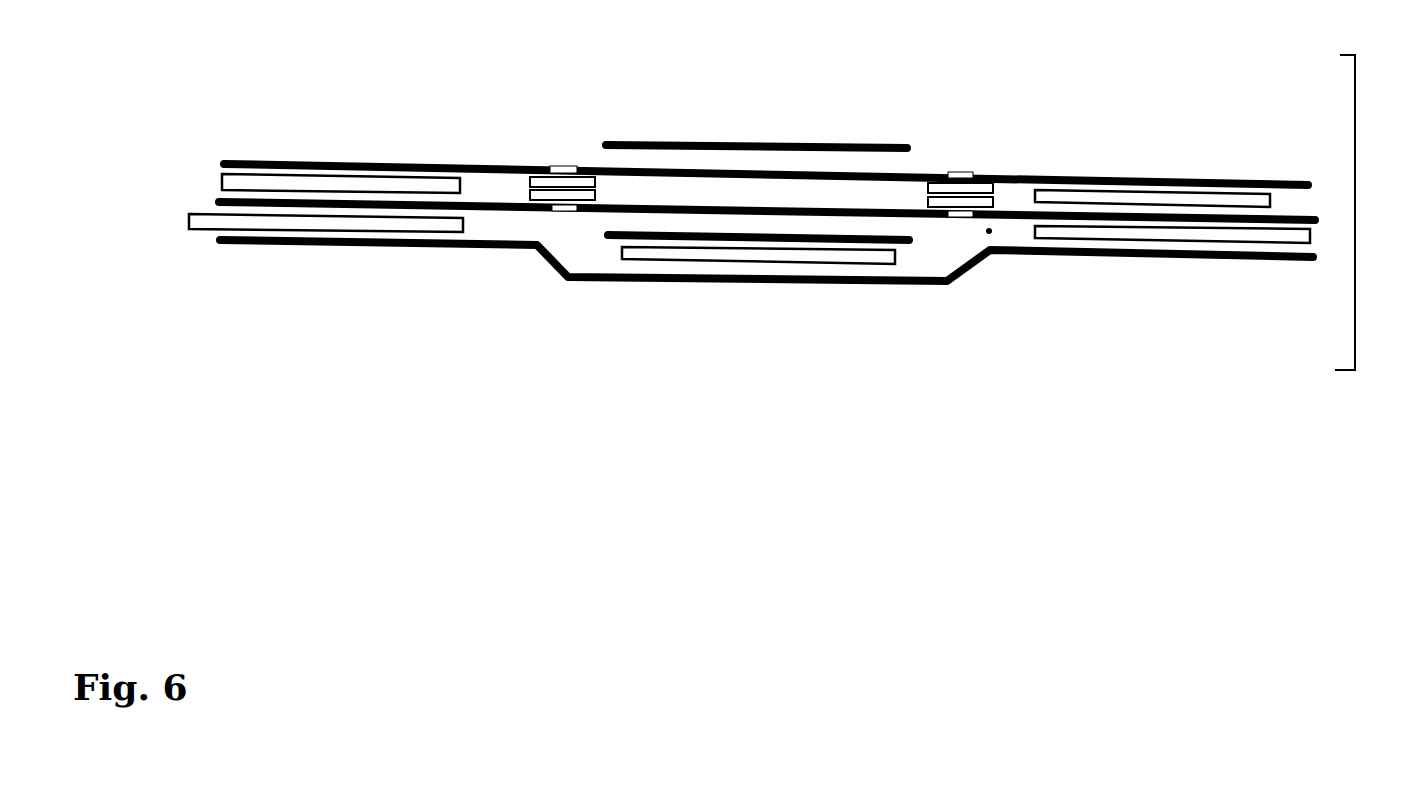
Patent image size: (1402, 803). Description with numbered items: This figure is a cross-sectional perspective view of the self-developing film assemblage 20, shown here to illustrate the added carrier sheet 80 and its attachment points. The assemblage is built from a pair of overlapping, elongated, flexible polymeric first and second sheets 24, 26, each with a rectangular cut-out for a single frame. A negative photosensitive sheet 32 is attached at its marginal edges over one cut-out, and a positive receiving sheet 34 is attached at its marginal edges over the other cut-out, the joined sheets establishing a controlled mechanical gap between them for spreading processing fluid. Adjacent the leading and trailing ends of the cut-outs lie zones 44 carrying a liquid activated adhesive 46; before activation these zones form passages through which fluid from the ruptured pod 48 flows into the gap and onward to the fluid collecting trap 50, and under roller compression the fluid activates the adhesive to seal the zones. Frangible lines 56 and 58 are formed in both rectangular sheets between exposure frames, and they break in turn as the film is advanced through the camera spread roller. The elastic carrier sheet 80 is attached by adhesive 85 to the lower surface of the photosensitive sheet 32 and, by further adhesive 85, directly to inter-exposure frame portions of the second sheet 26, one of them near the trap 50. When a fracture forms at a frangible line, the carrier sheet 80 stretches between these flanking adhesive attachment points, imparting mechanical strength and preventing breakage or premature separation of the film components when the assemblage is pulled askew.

The self-developing film assemblage 20 is at (1365, 212).
The first sheet 24 is at (1270, 180).
The second sheet 26 is at (1013, 218).
The negative photosensitive sheet 32 is at (903, 250).
The positive receiving sheet 34 is at (737, 143).
The zone 44 is at (761, 153).
The liquid activated adhesive 46 is at (566, 195).
The pod 48 is at (286, 178).
The fluid collecting trap 50 is at (1200, 200).
The frangible line 56 is at (556, 167).
The frangible line 58 is at (958, 173).
The carrier sheet 80 is at (1278, 257).
The adhesive 85 is at (303, 222).